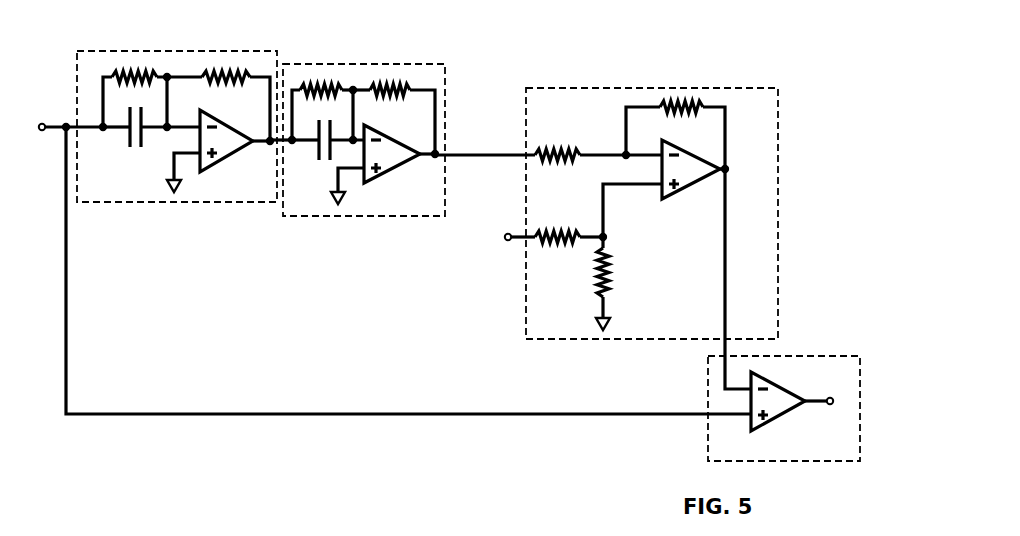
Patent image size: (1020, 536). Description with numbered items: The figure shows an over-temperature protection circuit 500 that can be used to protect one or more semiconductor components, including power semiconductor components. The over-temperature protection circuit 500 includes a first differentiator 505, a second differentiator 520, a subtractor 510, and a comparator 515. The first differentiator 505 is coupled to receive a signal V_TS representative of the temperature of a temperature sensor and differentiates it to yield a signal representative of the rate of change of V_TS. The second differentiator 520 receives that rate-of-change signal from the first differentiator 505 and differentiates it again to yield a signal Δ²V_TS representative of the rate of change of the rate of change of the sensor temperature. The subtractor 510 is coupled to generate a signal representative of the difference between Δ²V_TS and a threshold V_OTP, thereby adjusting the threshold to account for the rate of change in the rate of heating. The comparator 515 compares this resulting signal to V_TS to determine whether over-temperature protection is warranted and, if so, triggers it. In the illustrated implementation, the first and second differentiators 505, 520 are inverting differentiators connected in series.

The over-temperature protection circuit 500 is at (813, 67).
The first differentiator 505 is at (193, 51).
The second differentiator 520 is at (351, 64).
The subtractor 510 is at (689, 88).
The comparator 515 is at (826, 356).